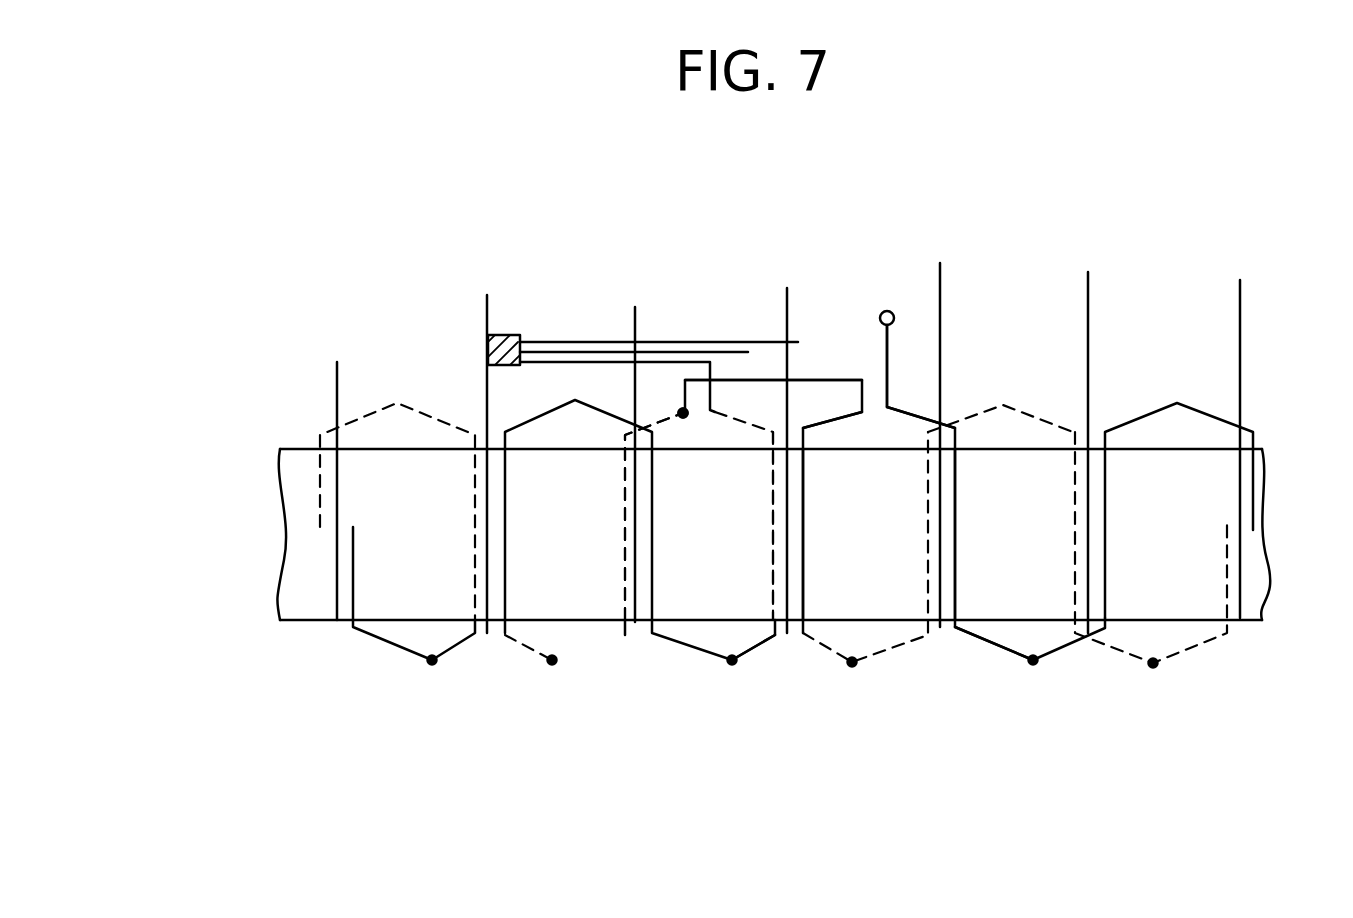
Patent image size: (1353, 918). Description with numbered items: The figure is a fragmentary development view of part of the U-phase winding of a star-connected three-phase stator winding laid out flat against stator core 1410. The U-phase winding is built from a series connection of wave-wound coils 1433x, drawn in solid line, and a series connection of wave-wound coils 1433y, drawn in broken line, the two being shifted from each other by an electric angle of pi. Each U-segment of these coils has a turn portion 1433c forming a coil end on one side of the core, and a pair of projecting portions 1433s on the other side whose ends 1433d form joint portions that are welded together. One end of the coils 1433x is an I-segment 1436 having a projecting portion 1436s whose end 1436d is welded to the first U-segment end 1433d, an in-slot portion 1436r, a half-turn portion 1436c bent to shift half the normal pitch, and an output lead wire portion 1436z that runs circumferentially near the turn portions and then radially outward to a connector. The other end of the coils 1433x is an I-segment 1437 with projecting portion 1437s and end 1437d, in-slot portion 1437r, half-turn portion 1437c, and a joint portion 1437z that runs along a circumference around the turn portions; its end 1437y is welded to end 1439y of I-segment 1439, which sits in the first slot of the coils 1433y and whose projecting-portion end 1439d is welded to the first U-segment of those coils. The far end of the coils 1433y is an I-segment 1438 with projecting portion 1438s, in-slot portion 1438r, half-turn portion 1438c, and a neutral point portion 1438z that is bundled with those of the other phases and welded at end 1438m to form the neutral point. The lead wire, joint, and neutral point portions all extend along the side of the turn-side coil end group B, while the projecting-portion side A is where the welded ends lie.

The stator core 1410 is at (300, 490).
The turn portion 1433c is at (1025, 410).
The end of projecting portion 1433d is at (432, 664).
The projecting portion 1433s is at (382, 645).
The wave-wound coil 1433x is at (1058, 657).
The wave-wound coil 1433y is at (1213, 643).
The I-segment 1436 is at (896, 389).
The half-turn portion 1436c is at (908, 423).
The end of projecting portion 1436d is at (1033, 662).
The in-slot portion 1436r is at (957, 527).
The projecting portion 1436s is at (1003, 653).
The output lead wire portion 1436z is at (890, 334).
The I-segment 1437 is at (884, 311).
The half-turn portion 1437c is at (836, 425).
The end of I-segment 1437 1437d is at (732, 664).
The in-slot portion 1437r is at (806, 543).
The projecting portion 1437s is at (760, 647).
The end of joint portion 1437y is at (683, 413).
The joint portion 1437z is at (872, 318).
The I-segment 1438 is at (767, 556).
The half-turn portion 1438c is at (686, 516).
The end of neutral point portion 1438m is at (485, 348).
The in-slot portion 1438r is at (773, 513).
The projecting portion 1438s is at (852, 666).
The neutral point portion 1438z is at (553, 342).
The I-segment 1439 is at (623, 530).
The end of projecting portion 1439d is at (552, 662).
The end of half-turn portion 1439y is at (683, 413).
The region A is at (939, 670).
The turn-side coil end group B is at (1116, 395).